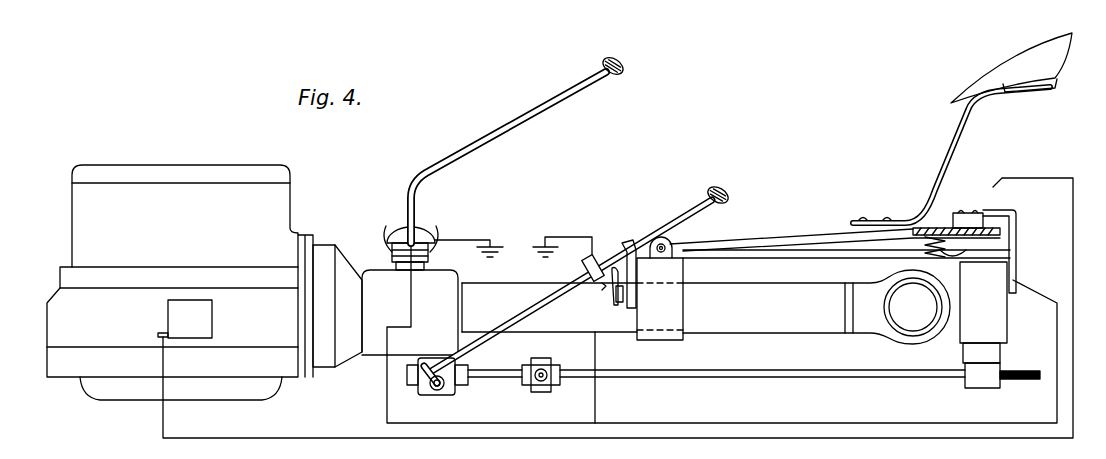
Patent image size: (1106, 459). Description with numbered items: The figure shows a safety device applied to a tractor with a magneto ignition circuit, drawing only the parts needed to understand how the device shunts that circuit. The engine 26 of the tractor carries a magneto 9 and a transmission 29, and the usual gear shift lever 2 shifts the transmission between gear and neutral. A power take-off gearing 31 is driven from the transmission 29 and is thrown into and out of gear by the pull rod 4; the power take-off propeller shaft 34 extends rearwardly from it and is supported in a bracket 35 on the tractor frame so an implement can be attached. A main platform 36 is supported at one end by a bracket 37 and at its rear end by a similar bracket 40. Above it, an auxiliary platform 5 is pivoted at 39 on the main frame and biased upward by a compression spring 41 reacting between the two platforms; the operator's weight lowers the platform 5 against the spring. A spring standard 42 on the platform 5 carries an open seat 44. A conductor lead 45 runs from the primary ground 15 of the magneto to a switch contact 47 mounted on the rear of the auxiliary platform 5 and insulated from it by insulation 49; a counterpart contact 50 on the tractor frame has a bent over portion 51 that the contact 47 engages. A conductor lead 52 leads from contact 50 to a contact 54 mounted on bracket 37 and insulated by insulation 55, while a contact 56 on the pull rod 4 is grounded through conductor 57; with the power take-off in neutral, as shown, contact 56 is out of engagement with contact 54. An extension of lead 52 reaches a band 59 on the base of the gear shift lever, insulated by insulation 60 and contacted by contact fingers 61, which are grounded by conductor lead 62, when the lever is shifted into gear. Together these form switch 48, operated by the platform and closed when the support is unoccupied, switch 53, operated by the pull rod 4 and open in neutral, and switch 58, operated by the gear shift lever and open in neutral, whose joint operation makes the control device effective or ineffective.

The gear shift lever 2 is at (509, 128).
The pull rod 4 is at (672, 222).
The auxiliary platform 5 is at (816, 240).
The magneto 9 is at (212, 318).
The primary ground 15 is at (158, 335).
The engine 26 is at (129, 152).
The transmission 29 is at (375, 355).
The power take-off gearing 31 is at (450, 392).
The power take-off propeller shaft 34 is at (766, 380).
The bracket 35 is at (968, 390).
The main platform 36 is at (778, 258).
The bracket 37 is at (674, 340).
The pivot 39 is at (674, 247).
The bracket 40 is at (1000, 331).
The compression spring 41 is at (959, 249).
The spring standard 42 is at (964, 121).
The seat 44 is at (1000, 72).
The conductor lead 45 is at (246, 439).
The switch contact 47 is at (992, 222).
The switch 48 is at (1036, 191).
The insulation 49 is at (967, 212).
The contact 50 is at (1010, 256).
The bent over portion 51 is at (1016, 212).
The conductor lead 52 is at (387, 412).
The switch 53 is at (601, 290).
The contact 54 is at (612, 278).
The insulation 55 is at (630, 312).
The contact 56 is at (599, 257).
The conductor 57 is at (578, 237).
The switch 58 is at (412, 266).
The band 59 is at (386, 249).
The insulation 60 is at (432, 258).
The contact fingers 61 is at (442, 229).
The conductor lead 62 is at (478, 238).